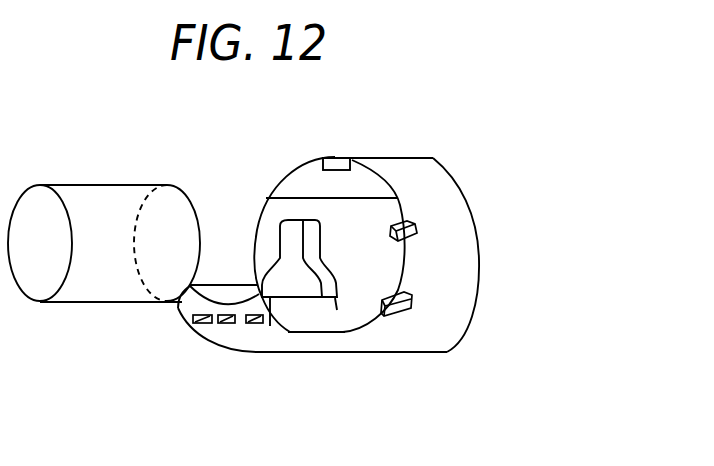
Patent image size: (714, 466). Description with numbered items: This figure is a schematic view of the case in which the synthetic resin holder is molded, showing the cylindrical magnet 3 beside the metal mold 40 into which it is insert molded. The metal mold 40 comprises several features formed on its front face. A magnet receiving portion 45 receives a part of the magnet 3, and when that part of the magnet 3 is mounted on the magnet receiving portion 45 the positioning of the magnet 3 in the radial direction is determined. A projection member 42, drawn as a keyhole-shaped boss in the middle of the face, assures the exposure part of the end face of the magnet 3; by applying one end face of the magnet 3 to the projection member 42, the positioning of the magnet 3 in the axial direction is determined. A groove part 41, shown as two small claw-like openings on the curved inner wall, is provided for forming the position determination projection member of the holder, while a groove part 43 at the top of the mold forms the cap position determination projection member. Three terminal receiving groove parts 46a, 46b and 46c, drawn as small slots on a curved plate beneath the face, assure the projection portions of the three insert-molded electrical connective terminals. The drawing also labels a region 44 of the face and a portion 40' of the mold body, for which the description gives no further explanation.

The magnet 3 is at (105, 215).
The metal mold 40 is at (400, 254).
The lens mount front portion 40' is at (336, 307).
The groove part 41 is at (415, 226).
The projection member 42 is at (290, 243).
The groove part 43 is at (340, 165).
The mount flange 44 is at (375, 187).
The magnet receiving portion 45 is at (320, 320).
The terminal receiving groove part 46a is at (203, 325).
The terminal receiving groove part 46b is at (227, 325).
The terminal receiving groove part 46c is at (254, 325).